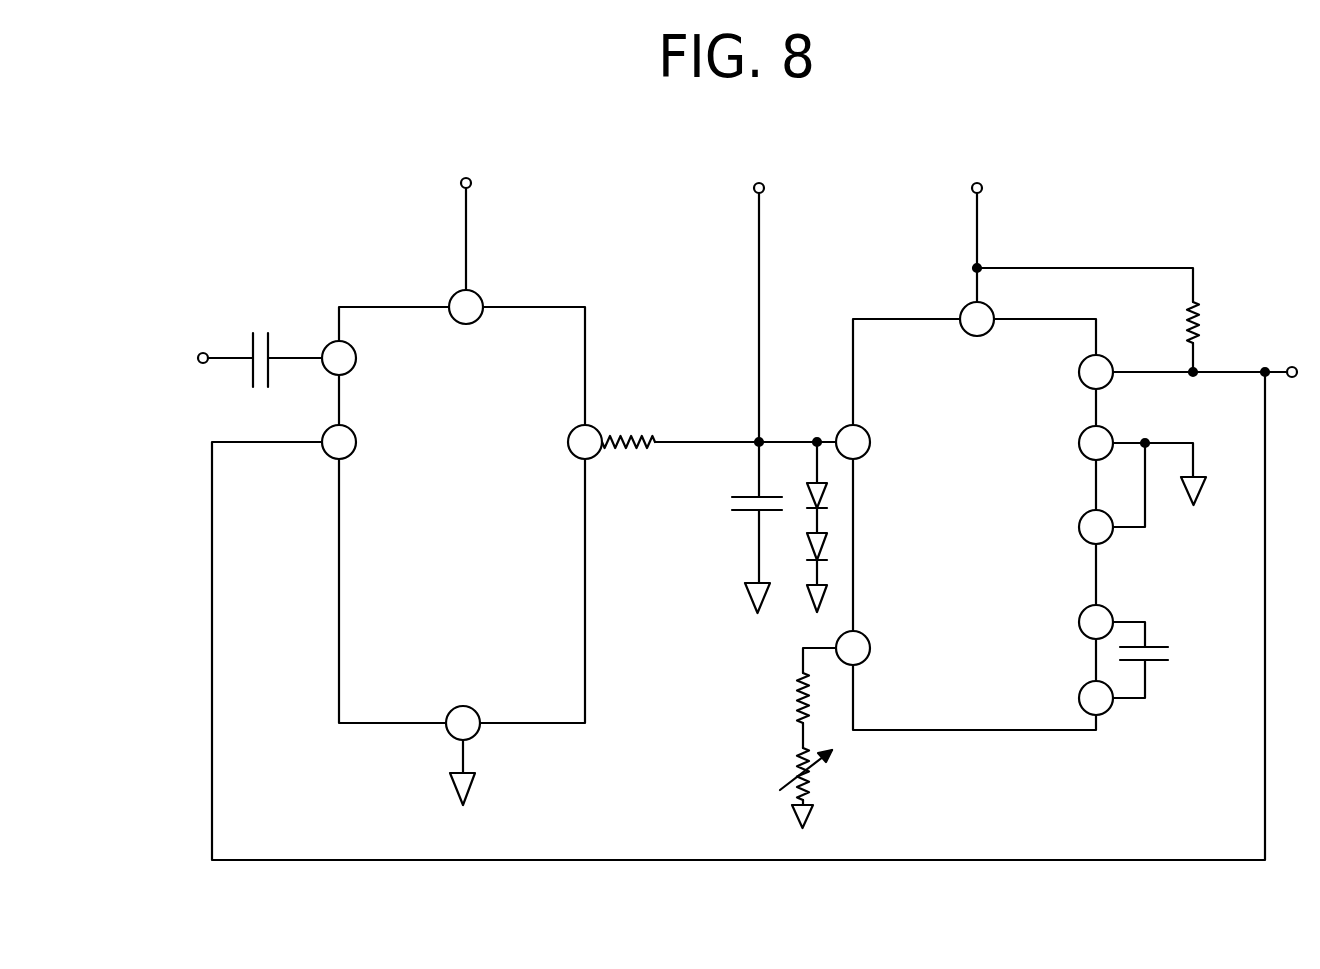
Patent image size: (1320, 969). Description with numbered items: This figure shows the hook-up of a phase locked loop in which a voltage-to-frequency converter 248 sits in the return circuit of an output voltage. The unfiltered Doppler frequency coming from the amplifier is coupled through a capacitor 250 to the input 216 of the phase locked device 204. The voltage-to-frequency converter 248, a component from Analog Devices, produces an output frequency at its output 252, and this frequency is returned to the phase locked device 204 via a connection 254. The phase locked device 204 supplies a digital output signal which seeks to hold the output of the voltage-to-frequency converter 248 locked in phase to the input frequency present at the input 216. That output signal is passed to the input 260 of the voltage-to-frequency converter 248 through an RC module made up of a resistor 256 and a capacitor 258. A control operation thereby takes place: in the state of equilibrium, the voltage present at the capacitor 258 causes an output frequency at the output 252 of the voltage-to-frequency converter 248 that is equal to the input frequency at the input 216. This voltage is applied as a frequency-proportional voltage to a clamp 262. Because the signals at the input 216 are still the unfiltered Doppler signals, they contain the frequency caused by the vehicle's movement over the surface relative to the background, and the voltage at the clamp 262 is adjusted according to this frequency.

The phase locked device 204 is at (530, 307).
The input 216 is at (333, 338).
The voltage-to-frequency converter 248 is at (1055, 319).
The capacitor 250 is at (252, 338).
The output 252 is at (1112, 380).
The connection 254 is at (555, 860).
The resistor 256 is at (647, 453).
The capacitor 258 is at (745, 512).
The input 260 is at (847, 422).
The clamp 262 is at (765, 185).